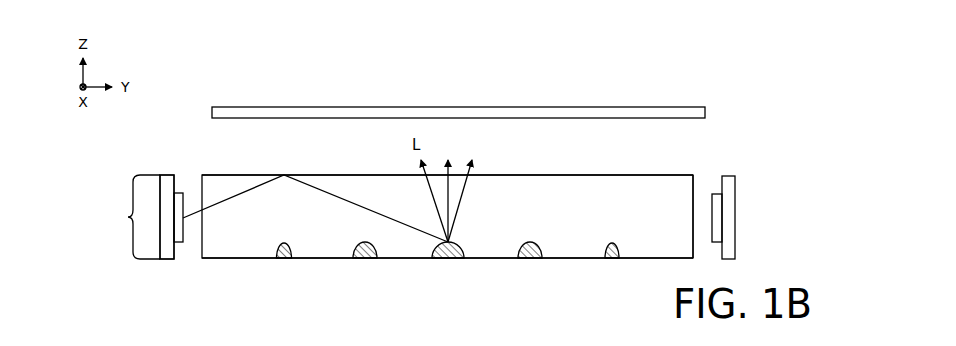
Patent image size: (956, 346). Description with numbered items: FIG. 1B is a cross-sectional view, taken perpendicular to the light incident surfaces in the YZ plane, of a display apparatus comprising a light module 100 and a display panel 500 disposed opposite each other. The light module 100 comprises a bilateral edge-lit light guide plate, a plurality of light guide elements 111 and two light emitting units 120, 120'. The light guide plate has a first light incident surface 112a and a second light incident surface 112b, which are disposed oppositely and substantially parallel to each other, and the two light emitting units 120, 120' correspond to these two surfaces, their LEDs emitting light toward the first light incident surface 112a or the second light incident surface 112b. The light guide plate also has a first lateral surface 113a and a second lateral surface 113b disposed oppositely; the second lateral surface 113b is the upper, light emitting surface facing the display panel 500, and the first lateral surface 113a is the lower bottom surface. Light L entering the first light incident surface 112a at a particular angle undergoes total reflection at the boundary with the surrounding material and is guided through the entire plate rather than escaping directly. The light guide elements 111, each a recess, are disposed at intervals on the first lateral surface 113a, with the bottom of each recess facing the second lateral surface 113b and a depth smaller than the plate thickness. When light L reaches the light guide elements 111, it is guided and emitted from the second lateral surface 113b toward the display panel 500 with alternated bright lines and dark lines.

The light module 100 is at (133, 217).
The light guide elements 111 is at (284, 258).
The first light incident surface 112a is at (202, 250).
The second light incident surface 112b is at (694, 187).
The first lateral surface 113a is at (632, 258).
The second lateral surface 113b is at (651, 175).
The light emitting unit 120 is at (166, 196).
The light emitting unit 120' is at (742, 196).
The display panel 500 is at (212, 112).